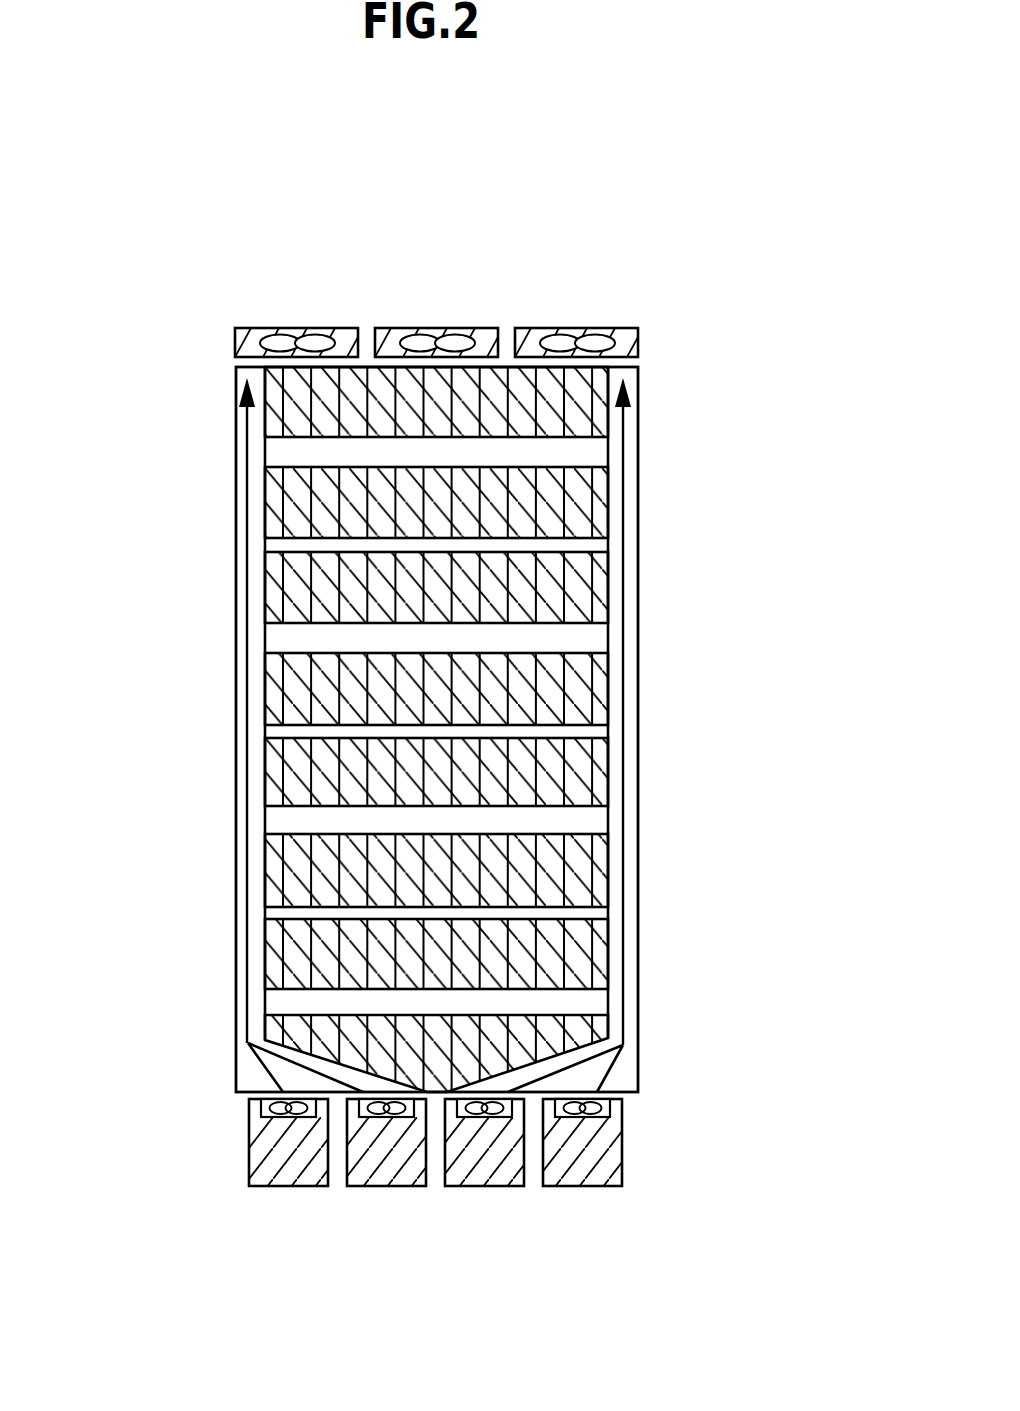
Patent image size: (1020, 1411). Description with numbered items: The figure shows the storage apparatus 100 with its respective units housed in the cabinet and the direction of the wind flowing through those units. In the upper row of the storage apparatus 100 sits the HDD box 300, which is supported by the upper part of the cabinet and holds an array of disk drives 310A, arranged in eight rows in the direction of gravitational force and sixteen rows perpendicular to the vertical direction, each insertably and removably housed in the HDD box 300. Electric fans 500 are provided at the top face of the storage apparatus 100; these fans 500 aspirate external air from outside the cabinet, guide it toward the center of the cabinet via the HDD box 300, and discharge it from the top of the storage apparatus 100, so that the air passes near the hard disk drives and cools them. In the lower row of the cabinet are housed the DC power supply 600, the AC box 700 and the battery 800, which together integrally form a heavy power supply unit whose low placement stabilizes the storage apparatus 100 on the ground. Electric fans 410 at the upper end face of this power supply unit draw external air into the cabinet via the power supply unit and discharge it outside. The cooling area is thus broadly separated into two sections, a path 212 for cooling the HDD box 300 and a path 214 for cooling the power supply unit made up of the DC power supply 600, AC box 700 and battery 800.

The storage apparatus 100 is at (556, 226).
The electric fans 500 is at (551, 338).
The HDD box 300 is at (598, 423).
The disk drives 310A is at (597, 498).
The path for cooling the HDD box 212 is at (185, 367).
The path for cooling the power supply unit 214 is at (187, 1070).
The electric fans 410 is at (587, 1123).
The DC power supply 600 is at (555, 1177).
The AC box 700 is at (484, 1142).
The battery 800 is at (582, 1142).